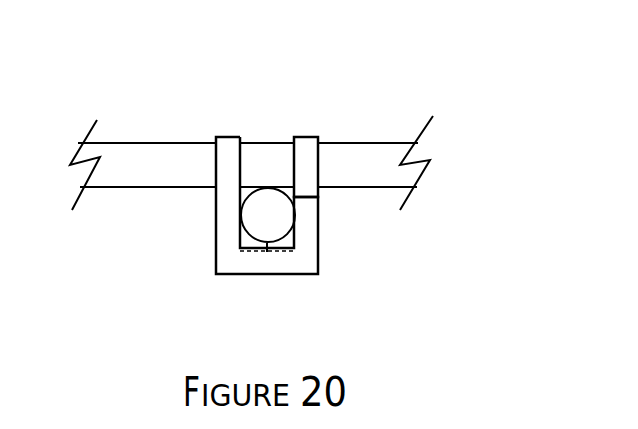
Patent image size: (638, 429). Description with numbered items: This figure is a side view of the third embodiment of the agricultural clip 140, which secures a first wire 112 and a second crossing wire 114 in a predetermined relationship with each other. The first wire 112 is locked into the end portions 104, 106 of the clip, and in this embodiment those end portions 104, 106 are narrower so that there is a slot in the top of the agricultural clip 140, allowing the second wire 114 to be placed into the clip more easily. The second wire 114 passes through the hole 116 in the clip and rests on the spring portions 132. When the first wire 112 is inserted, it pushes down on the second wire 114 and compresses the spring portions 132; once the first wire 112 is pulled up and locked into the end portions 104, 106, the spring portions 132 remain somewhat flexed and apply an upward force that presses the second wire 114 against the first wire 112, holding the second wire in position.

The first wire 112 is at (140, 152).
The end portion 104 is at (233, 153).
The end portion 106 is at (310, 137).
The agricultural clip 140 is at (308, 116).
The second wire 114 is at (262, 209).
The hole 116 is at (294, 238).
The spring portions 132 is at (255, 250).